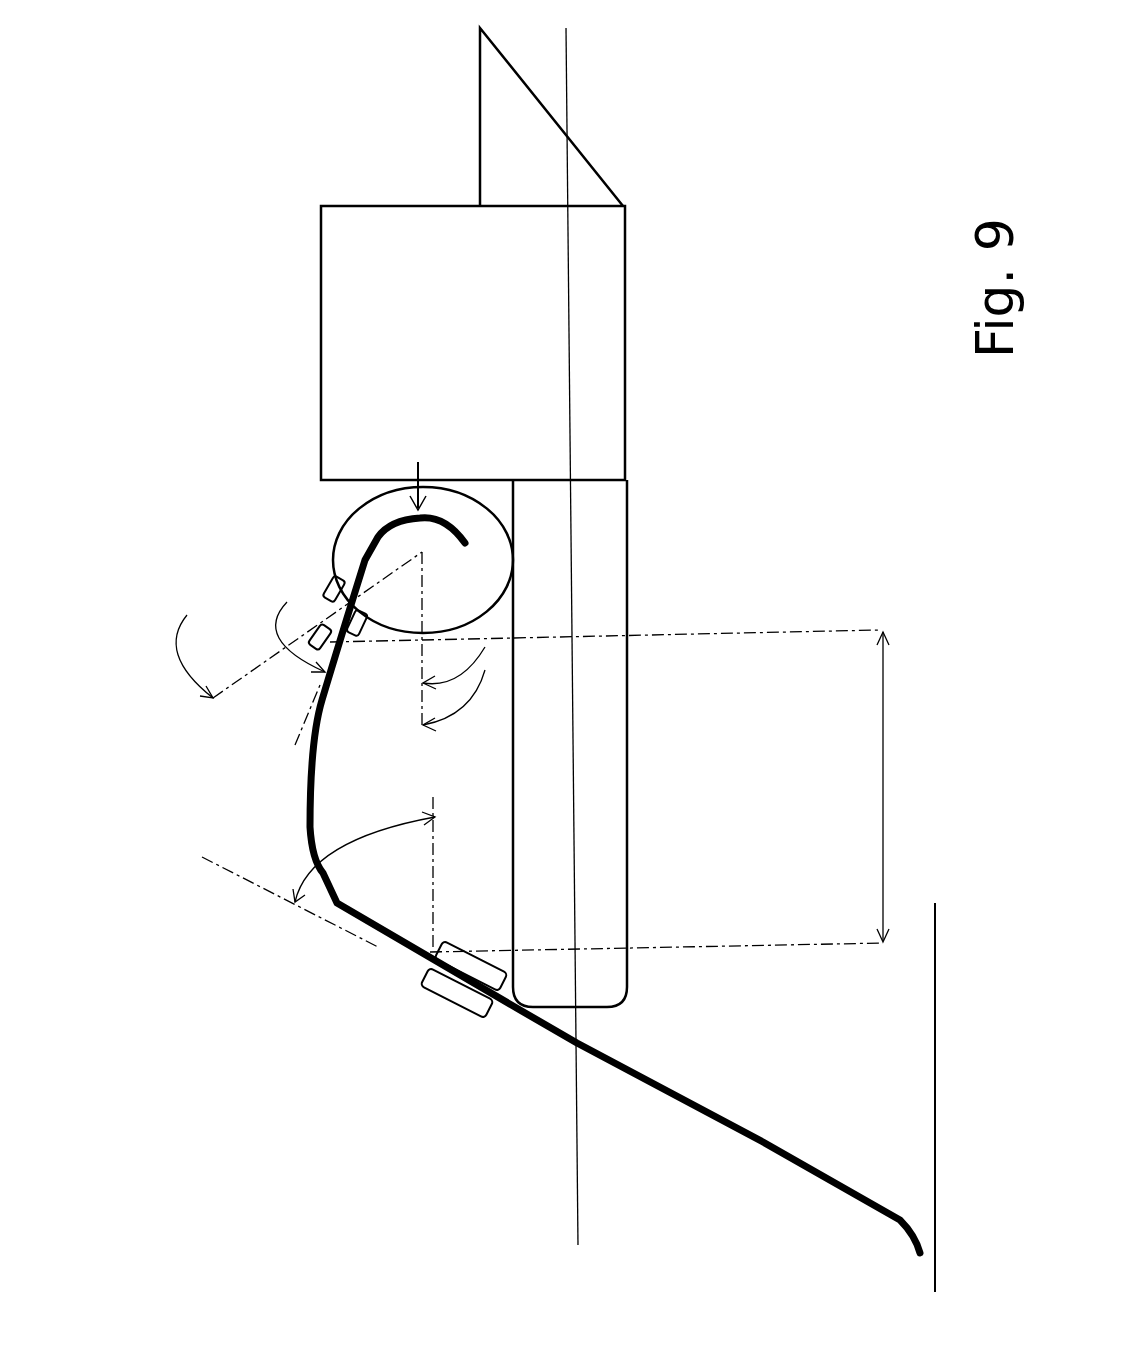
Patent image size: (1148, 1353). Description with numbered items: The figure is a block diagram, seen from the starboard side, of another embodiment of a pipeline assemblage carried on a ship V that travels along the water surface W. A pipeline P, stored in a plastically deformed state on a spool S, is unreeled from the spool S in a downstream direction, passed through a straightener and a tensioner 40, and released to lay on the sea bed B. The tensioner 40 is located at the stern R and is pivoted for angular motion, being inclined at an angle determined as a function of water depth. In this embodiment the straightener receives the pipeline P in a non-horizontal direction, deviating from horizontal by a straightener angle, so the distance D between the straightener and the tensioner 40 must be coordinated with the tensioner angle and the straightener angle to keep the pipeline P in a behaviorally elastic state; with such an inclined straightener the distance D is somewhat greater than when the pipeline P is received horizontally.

The tensioner 40 is at (452, 1005).
The ship V is at (628, 500).
The stern R is at (613, 1005).
The spool S is at (333, 547).
The pipeline P is at (757, 1145).
The water surface W is at (557, 636).
The sea bed B is at (933, 1115).
The distance D is at (883, 791).